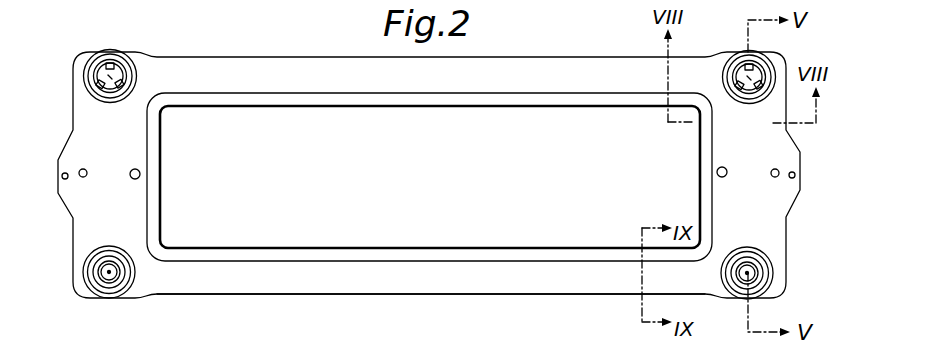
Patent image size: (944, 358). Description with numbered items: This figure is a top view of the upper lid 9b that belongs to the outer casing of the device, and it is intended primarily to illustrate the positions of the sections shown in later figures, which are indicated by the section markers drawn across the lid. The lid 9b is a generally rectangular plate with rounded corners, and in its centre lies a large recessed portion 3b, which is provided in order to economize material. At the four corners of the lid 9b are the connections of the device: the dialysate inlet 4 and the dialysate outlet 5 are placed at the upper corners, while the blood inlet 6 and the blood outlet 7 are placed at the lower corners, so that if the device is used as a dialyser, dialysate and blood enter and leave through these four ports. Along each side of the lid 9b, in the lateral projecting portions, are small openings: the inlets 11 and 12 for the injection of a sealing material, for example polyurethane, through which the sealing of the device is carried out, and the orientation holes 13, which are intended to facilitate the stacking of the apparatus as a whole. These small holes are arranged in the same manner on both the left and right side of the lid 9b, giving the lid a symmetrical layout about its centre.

The recessed portion 3b is at (296, 122).
The upper lid 9b is at (312, 274).
The dialysate inlet 4 is at (757, 72).
The dialysate outlet 5 is at (118, 66).
The blood inlet 6 is at (110, 276).
The blood outlet 7 is at (750, 273).
The sealing material inlet 11 is at (140, 174).
The sealing material inlet 12 is at (67, 180).
The orientation hole 13 is at (108, 151).